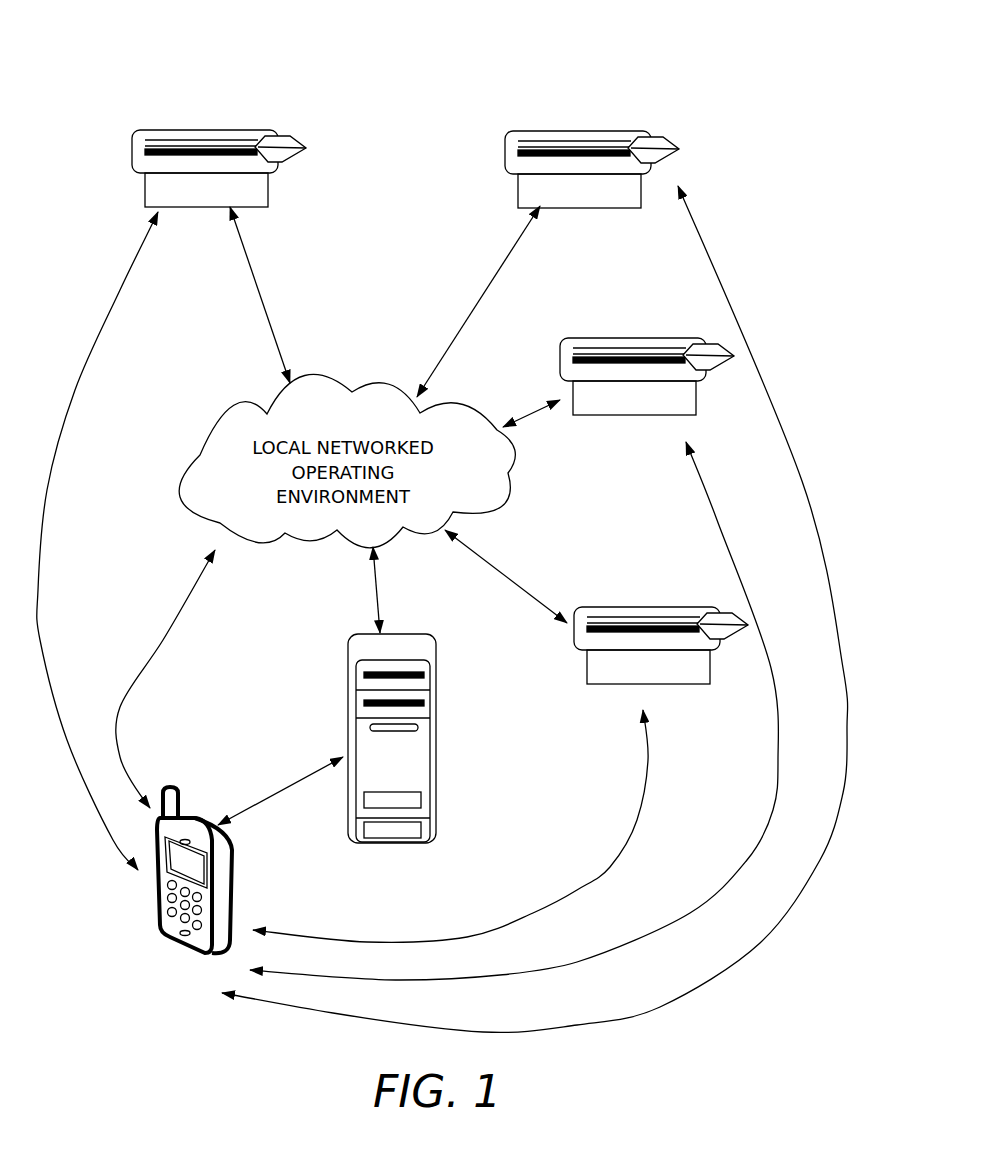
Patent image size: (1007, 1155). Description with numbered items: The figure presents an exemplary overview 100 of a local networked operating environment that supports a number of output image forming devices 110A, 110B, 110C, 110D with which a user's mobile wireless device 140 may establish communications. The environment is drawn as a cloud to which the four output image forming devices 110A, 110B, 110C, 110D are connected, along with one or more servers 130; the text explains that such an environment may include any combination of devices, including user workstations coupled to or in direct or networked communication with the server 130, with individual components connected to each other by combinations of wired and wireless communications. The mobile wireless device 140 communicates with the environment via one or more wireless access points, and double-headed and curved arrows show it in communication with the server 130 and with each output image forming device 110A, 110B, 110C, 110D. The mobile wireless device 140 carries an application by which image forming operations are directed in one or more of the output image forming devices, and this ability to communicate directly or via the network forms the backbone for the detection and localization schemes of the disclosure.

The exemplary overview 100 is at (198, 40).
The output image forming device 110A is at (195, 130).
The output image forming device 110B is at (568, 130).
The output image forming device 110C is at (647, 338).
The output image forming device 110D is at (650, 607).
The server 130 is at (348, 680).
The mobile wireless device 140 is at (178, 943).